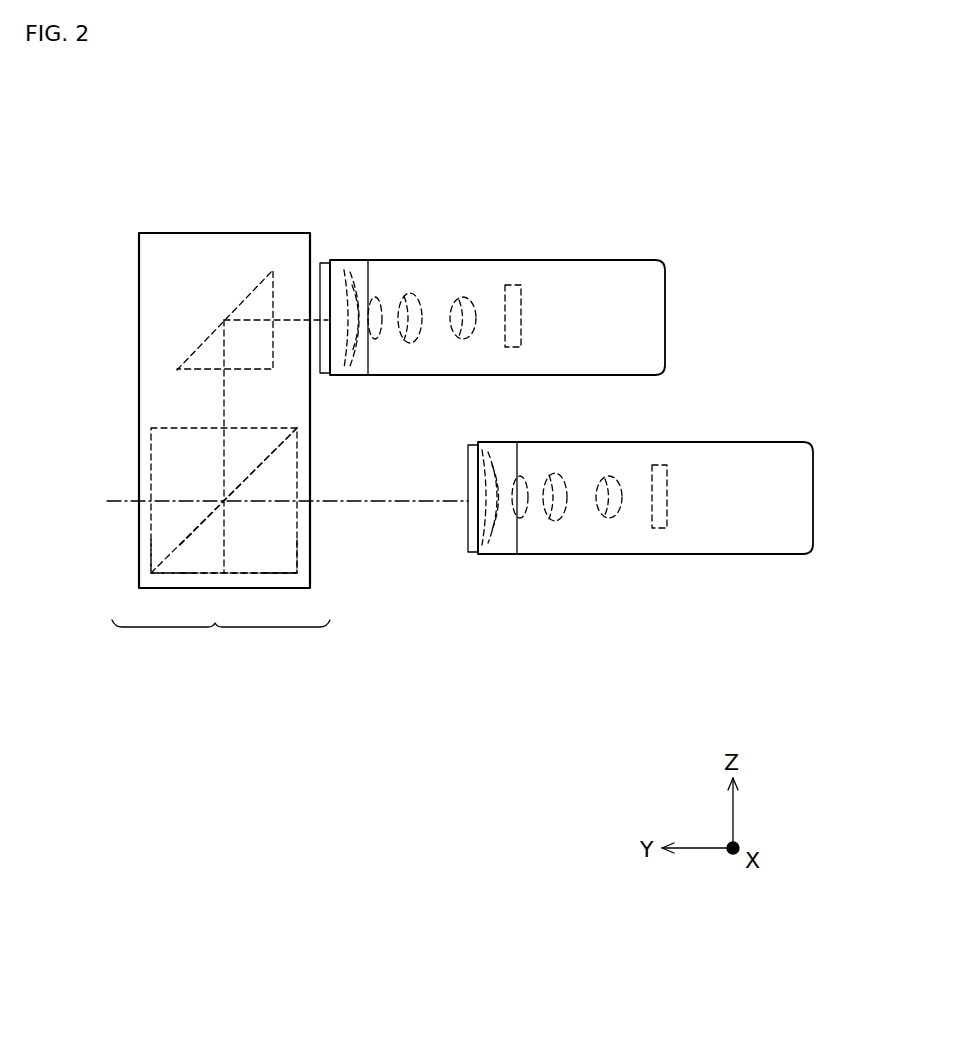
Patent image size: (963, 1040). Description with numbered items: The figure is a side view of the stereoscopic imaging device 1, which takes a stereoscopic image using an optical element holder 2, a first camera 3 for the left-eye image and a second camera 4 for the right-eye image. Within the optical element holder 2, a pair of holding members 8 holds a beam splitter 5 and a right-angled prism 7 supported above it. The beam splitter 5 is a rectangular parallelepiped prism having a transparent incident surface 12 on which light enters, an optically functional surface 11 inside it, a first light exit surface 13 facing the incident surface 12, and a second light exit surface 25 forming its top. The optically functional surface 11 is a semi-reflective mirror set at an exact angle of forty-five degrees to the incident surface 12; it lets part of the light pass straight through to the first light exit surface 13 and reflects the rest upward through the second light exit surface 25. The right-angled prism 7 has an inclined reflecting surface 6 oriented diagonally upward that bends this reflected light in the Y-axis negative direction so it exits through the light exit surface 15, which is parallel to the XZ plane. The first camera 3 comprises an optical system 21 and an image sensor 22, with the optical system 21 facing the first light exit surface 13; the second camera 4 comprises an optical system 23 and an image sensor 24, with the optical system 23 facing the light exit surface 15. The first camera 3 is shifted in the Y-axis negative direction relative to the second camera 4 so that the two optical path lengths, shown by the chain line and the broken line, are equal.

The stereoscopic imaging device 1 is at (722, 216).
The optical element holder 2 is at (223, 661).
The first camera 3 is at (776, 538).
The second camera 4 is at (601, 270).
The beam splitter 5 is at (152, 466).
The reflecting surface 6 is at (220, 319).
The right-angled prism 7 is at (180, 380).
The holding member 8 is at (160, 245).
The optically functional surface 11 is at (208, 578).
The incident surface 12 is at (148, 540).
The first light exit surface 13 is at (300, 549).
The light exit surface 15 is at (274, 292).
The optical system 21 is at (614, 558).
The image sensor 22 is at (654, 530).
The optical system 23 is at (472, 255).
The image sensor 24 is at (507, 289).
The second light exit surface 25 is at (263, 424).